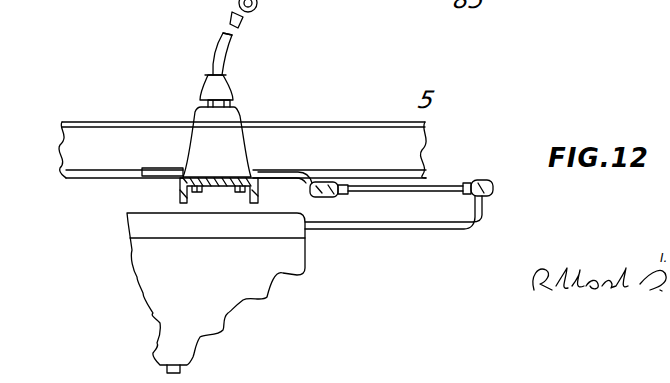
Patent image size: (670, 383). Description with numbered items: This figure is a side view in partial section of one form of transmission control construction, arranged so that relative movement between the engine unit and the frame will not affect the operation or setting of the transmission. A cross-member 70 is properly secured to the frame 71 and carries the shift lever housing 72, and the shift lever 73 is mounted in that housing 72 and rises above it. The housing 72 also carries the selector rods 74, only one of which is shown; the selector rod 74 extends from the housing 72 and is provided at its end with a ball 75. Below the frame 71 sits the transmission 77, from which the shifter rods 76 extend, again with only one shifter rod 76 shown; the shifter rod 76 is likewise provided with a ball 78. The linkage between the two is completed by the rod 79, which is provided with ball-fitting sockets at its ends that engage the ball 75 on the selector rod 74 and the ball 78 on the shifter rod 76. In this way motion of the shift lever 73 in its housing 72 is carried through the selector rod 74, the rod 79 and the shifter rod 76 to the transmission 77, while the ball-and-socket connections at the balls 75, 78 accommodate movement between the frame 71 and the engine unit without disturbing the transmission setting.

The cross-member 70 is at (181, 190).
The frame 71 is at (100, 133).
The shift lever housing 72 is at (238, 123).
The shift lever 73 is at (227, 50).
The selector rod 74 is at (303, 171).
The ball 75 is at (330, 188).
The shifter rod 76 is at (442, 233).
The transmission 77 is at (287, 263).
The ball 78 is at (478, 182).
The rod 79 is at (422, 185).